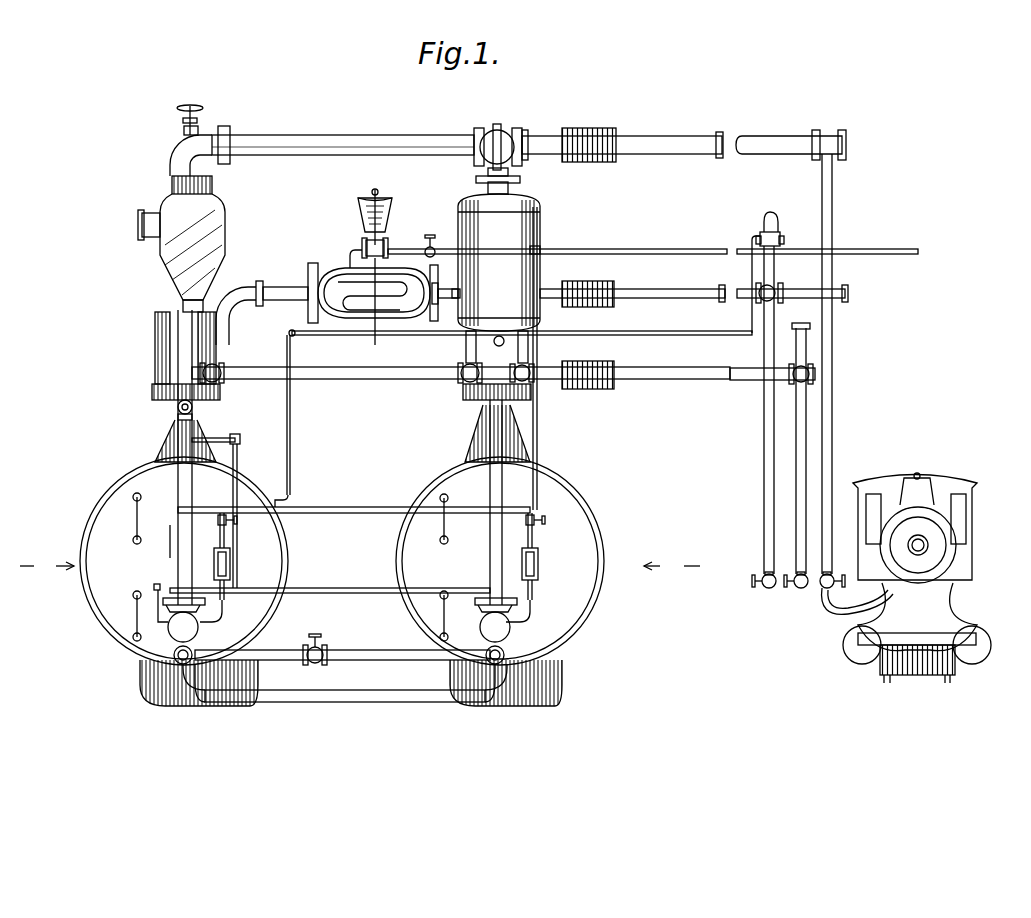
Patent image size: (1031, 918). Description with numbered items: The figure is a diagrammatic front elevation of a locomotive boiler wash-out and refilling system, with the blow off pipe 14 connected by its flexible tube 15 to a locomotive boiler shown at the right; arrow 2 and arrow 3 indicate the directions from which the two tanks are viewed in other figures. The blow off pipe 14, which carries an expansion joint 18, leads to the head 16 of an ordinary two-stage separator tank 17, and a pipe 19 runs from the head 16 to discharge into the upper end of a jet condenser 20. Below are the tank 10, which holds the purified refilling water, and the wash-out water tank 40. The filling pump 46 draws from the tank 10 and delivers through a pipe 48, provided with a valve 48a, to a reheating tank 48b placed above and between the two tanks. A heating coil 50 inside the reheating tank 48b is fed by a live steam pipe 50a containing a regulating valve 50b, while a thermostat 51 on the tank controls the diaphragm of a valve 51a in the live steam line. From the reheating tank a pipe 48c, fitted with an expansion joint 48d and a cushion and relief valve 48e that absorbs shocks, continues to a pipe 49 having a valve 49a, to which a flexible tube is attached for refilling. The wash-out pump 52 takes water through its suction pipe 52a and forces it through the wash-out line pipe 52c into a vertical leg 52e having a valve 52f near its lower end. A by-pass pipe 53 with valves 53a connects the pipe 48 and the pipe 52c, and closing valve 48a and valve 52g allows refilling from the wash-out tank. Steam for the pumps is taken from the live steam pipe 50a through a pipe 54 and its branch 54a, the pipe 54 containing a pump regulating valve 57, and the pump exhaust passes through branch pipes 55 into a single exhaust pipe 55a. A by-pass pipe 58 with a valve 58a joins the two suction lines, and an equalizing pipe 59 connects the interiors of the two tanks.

The arrow 2 is at (47, 567).
The arrow 3 is at (672, 567).
The tank 10 is at (105, 640).
The blow off pipe 14 is at (833, 402).
The flexible tube 15 is at (826, 612).
The head 16 is at (488, 132).
The two-stage separator tank 17 is at (543, 218).
The expansion joint 18 is at (602, 136).
The pipe 19 is at (362, 135).
The jet condenser 20 is at (227, 216).
The wash-out water tank 40 is at (574, 498).
The filling pump 46 is at (200, 628).
The pipe 48 is at (178, 482).
The valve 48a is at (178, 406).
The reheating tank 48b is at (322, 272).
The pipe 48c is at (628, 289).
The expansion joint 48d is at (582, 307).
The cushion and relief valve 48e is at (765, 224).
The pipe 49 is at (764, 456).
The valve 49a is at (762, 590).
The heating coil 50 is at (350, 326).
The live steam pipe 50a is at (884, 242).
The regulating valve 50b is at (431, 245).
The thermostat 51 is at (694, 326).
The valve 51a is at (362, 240).
The wash-out pump 52 is at (506, 636).
The suction pipe 52a is at (582, 389).
The wash-out line pipe 52c is at (488, 424).
The vertical leg 52e is at (806, 438).
The valve 52f is at (797, 590).
The valve 52g is at (530, 366).
The by-pass pipe 53 is at (388, 379).
The valves 53a is at (220, 366).
The pipe 54 is at (538, 442).
The branch 54a is at (340, 502).
The branch pipes 55 is at (338, 588).
The exhaust pipe 55a is at (255, 450).
The pump regulating valve 57 is at (540, 574).
The by-pass pipe 58 is at (366, 650).
The valve 58a is at (312, 640).
The equalizing pipe 59 is at (366, 690).